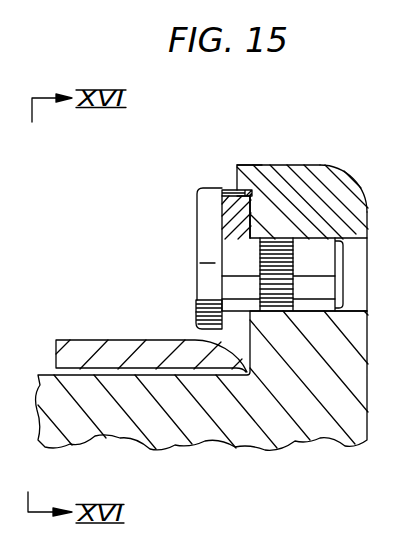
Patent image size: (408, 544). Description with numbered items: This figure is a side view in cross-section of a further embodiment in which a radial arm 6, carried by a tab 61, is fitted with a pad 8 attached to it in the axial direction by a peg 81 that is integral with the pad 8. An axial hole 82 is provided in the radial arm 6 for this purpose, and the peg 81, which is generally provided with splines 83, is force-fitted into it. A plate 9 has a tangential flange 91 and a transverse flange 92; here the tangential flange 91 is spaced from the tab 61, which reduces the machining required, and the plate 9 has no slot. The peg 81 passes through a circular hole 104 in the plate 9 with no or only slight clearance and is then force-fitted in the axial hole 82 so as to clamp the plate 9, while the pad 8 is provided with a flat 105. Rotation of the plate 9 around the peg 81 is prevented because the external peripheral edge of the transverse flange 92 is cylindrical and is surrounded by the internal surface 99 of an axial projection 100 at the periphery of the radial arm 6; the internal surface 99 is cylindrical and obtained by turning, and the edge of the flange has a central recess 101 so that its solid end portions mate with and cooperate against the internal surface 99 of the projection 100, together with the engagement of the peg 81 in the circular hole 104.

The radial arm 6 is at (350, 170).
The pad 8 is at (206, 240).
The plate 9 is at (106, 332).
The tab 61 is at (71, 447).
The peg 81 is at (313, 240).
The axial hole 82 is at (362, 311).
The splines 83 is at (284, 296).
The tangential flange 91 is at (82, 350).
The transverse flange 92 is at (232, 212).
The internal surface 99 is at (293, 203).
The axial projection 100 is at (236, 164).
The central recess 101 is at (228, 190).
The circular hole 104 is at (220, 299).
The flat 105 is at (195, 331).